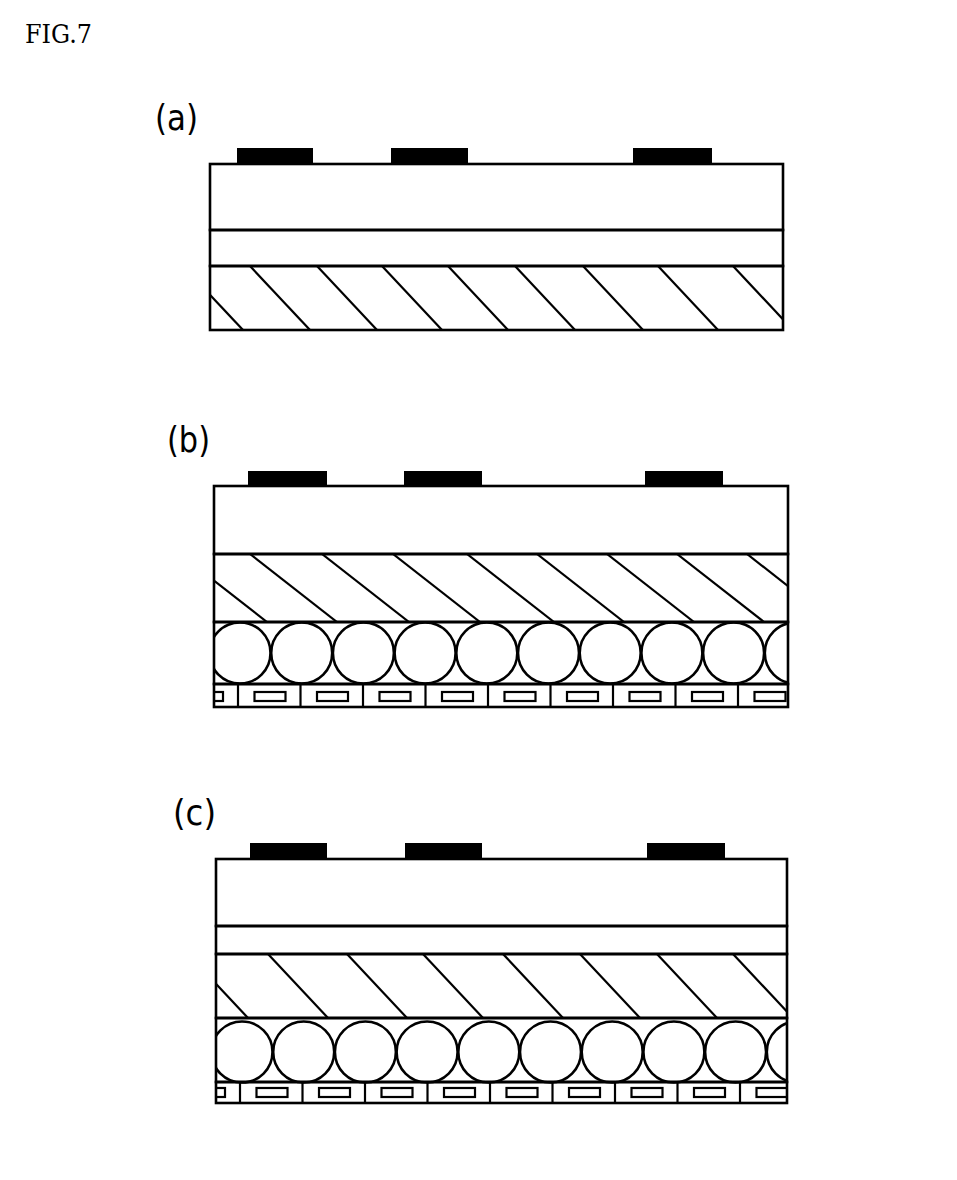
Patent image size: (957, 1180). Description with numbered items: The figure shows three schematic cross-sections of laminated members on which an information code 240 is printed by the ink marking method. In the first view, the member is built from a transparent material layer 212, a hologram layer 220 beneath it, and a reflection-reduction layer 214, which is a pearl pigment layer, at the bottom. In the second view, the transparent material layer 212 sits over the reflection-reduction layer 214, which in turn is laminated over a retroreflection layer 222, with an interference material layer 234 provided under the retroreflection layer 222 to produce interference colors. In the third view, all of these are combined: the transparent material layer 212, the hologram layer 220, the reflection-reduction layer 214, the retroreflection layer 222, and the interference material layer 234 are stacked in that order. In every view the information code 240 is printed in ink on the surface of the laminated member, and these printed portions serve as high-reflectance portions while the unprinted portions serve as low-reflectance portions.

The transparent material layer 212 is at (770, 211).
The hologram layer 220 is at (770, 257).
The reflection-reduction layer 214 is at (770, 300).
The retroreflection layer 222 is at (796, 626).
The interference material layer 234 is at (788, 697).
The information code 240 is at (698, 148).